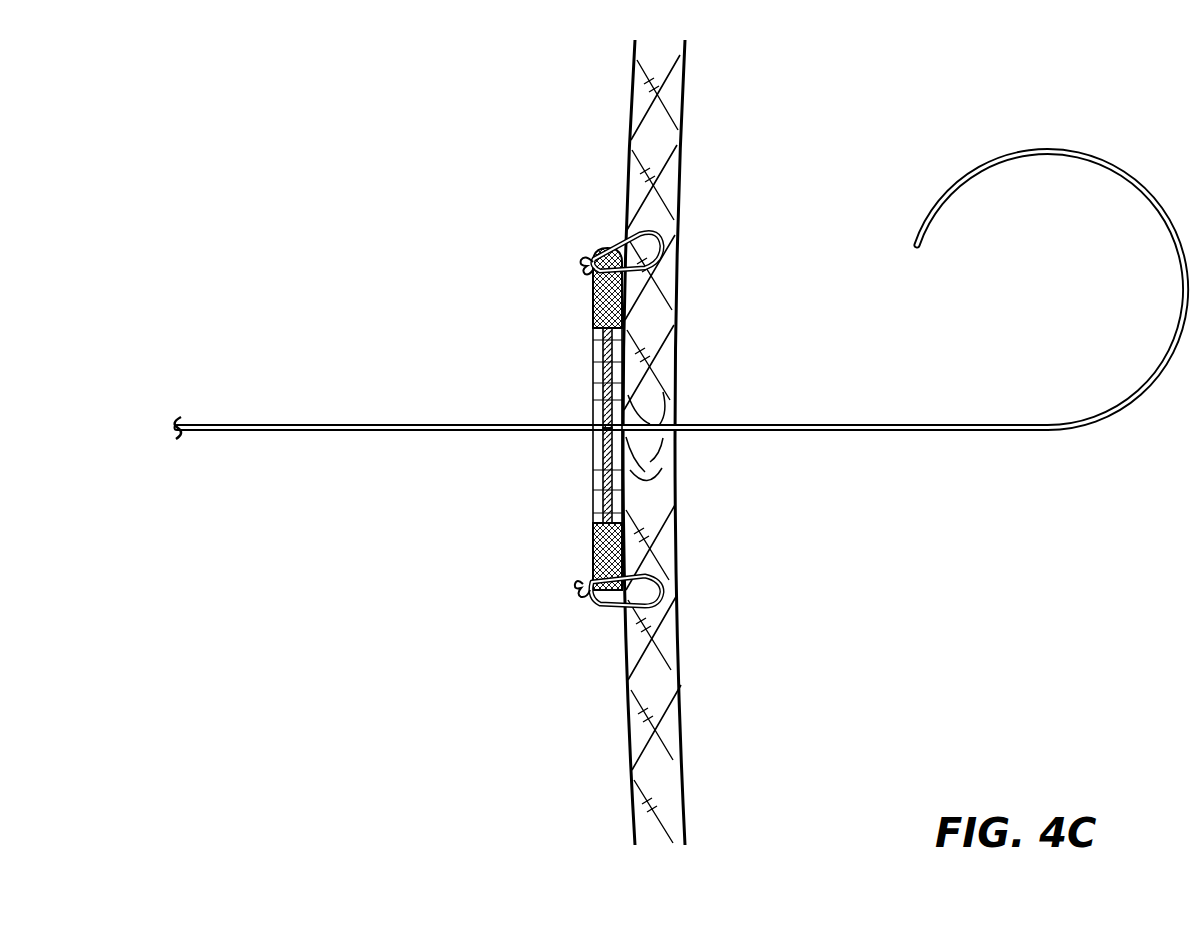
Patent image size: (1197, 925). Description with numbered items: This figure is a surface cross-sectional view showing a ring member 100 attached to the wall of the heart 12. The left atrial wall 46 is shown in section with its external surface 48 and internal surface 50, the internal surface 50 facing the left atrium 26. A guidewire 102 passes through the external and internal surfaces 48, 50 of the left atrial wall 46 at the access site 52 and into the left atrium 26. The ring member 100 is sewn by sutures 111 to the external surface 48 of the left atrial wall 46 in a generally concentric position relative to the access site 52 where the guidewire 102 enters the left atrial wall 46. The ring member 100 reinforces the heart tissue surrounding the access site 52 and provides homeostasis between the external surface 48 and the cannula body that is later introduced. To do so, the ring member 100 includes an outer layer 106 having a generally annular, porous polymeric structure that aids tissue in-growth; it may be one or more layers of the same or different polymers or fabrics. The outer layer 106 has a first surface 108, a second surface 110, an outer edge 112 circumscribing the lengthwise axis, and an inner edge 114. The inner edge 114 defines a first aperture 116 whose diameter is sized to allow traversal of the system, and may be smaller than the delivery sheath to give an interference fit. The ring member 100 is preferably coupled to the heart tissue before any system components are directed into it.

The heart 12 is at (556, 137).
The left atrium 26 is at (867, 515).
The left atrial wall 46 is at (640, 86).
The external surface 48 is at (628, 712).
The internal surface 50 is at (680, 712).
The access site 52 is at (662, 425).
The ring member 100 is at (572, 554).
The guidewire 102 is at (987, 433).
The outer layer 106 is at (585, 282).
The first surface 108 is at (622, 308).
The second surface 110 is at (597, 310).
The sutures 111 is at (658, 243).
The outer edge 112 is at (605, 247).
The inner edge 114 is at (608, 470).
The first aperture 116 is at (608, 400).